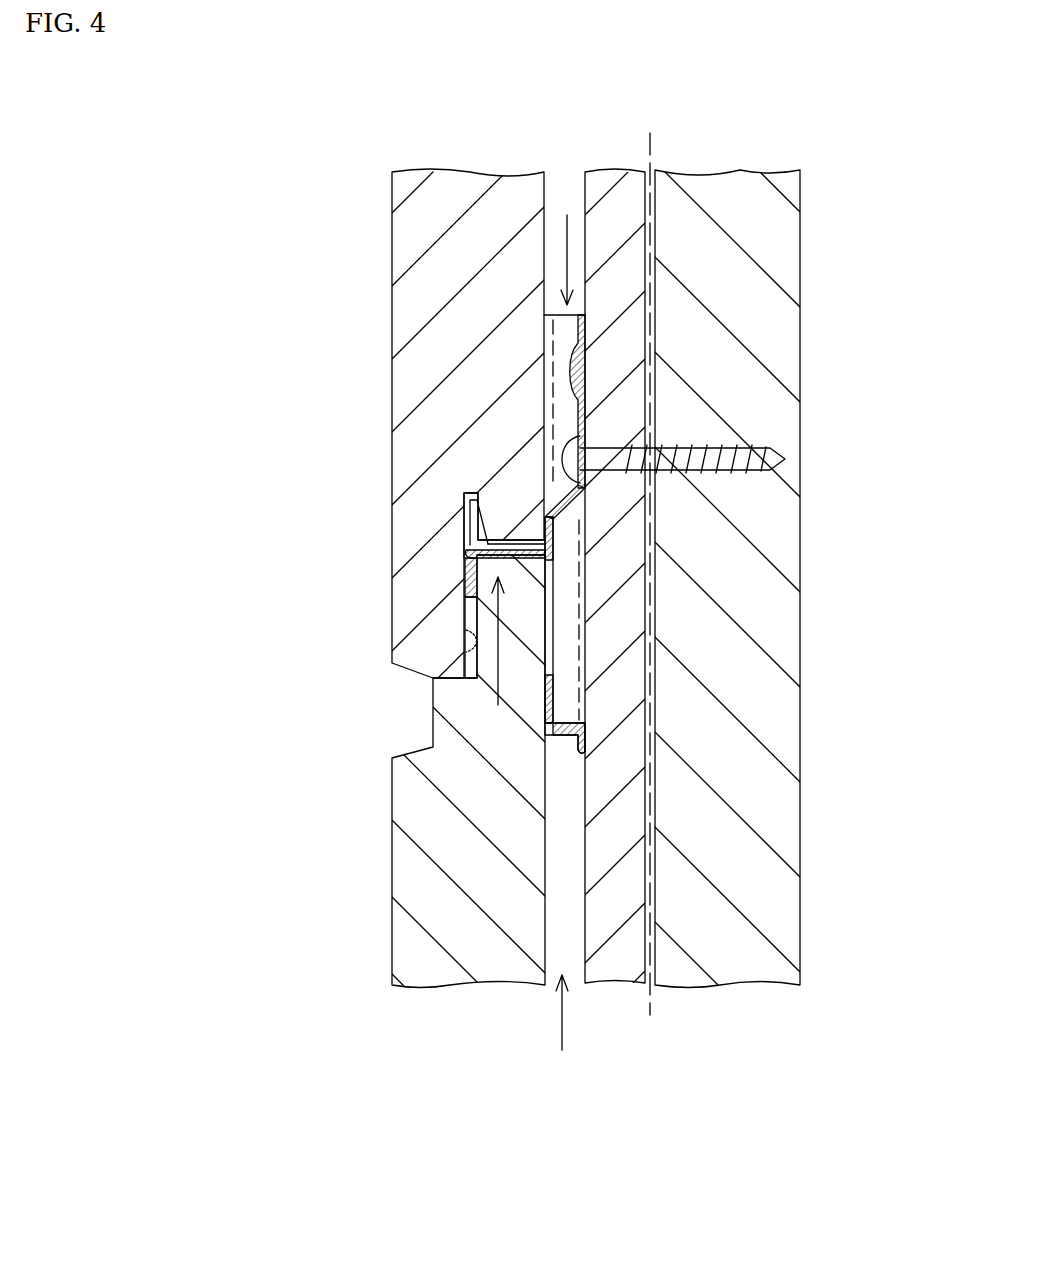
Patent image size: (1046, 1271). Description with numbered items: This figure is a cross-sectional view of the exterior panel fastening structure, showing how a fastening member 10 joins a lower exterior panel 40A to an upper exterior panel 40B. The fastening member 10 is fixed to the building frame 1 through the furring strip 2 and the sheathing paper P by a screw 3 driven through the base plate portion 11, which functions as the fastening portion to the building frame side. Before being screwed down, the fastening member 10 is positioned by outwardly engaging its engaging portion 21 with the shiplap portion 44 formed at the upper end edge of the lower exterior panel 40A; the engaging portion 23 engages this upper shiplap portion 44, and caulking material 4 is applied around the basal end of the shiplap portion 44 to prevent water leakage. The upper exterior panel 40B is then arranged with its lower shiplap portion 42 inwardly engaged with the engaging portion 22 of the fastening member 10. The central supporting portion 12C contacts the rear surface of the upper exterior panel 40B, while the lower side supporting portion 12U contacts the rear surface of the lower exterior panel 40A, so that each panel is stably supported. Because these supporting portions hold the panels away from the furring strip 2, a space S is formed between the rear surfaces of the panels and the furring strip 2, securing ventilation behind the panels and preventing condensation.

The upper exterior panel 40B is at (415, 232).
The lower exterior panel 40A is at (415, 912).
The building frame 1 is at (735, 648).
The furring strip 2 is at (615, 877).
The screw 3 is at (720, 447).
The caulking material 4 is at (470, 643).
The fastening member 10 is at (567, 242).
The base plate portion 11 is at (577, 337).
The central supporting portion 12C is at (553, 532).
The lower side supporting portion 12U is at (553, 697).
The engaging portion 21 is at (501, 660).
The engaging portion 22 is at (470, 513).
The engaging portion 23 is at (470, 585).
The lower shiplap portion 42 is at (508, 523).
The shiplap portion 44 is at (520, 602).
The sheathing paper P is at (650, 152).
The space S is at (562, 1032).